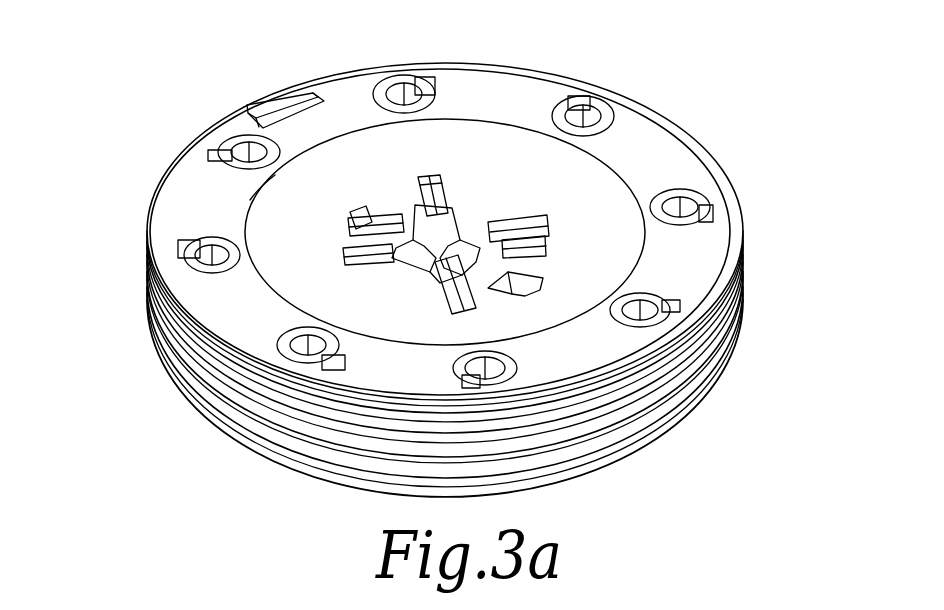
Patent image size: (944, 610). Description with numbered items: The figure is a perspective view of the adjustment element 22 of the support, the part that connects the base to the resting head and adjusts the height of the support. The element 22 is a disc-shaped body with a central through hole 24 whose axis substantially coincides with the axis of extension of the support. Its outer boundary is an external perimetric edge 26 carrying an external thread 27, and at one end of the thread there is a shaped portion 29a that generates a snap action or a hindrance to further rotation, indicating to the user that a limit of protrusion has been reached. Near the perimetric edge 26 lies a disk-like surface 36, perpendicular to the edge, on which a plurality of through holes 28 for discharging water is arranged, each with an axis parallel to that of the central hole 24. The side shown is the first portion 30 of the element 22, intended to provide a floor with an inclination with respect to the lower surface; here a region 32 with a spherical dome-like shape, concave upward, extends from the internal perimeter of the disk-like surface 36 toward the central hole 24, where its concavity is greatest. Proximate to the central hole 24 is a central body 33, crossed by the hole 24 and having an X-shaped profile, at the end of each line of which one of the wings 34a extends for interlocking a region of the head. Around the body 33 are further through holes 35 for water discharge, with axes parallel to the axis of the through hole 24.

The element 22 is at (749, 323).
The central through hole 24 is at (430, 236).
The external perimetric edge 26 is at (534, 381).
The external thread 27 is at (229, 376).
The through holes 28 is at (700, 200).
The portion 29a is at (245, 100).
The first portion 30 is at (510, 117).
The region 32 is at (363, 150).
The body 33 is at (262, 187).
The wings 34a is at (430, 172).
The through holes 35 is at (532, 271).
The disk-like surface 36 is at (602, 340).